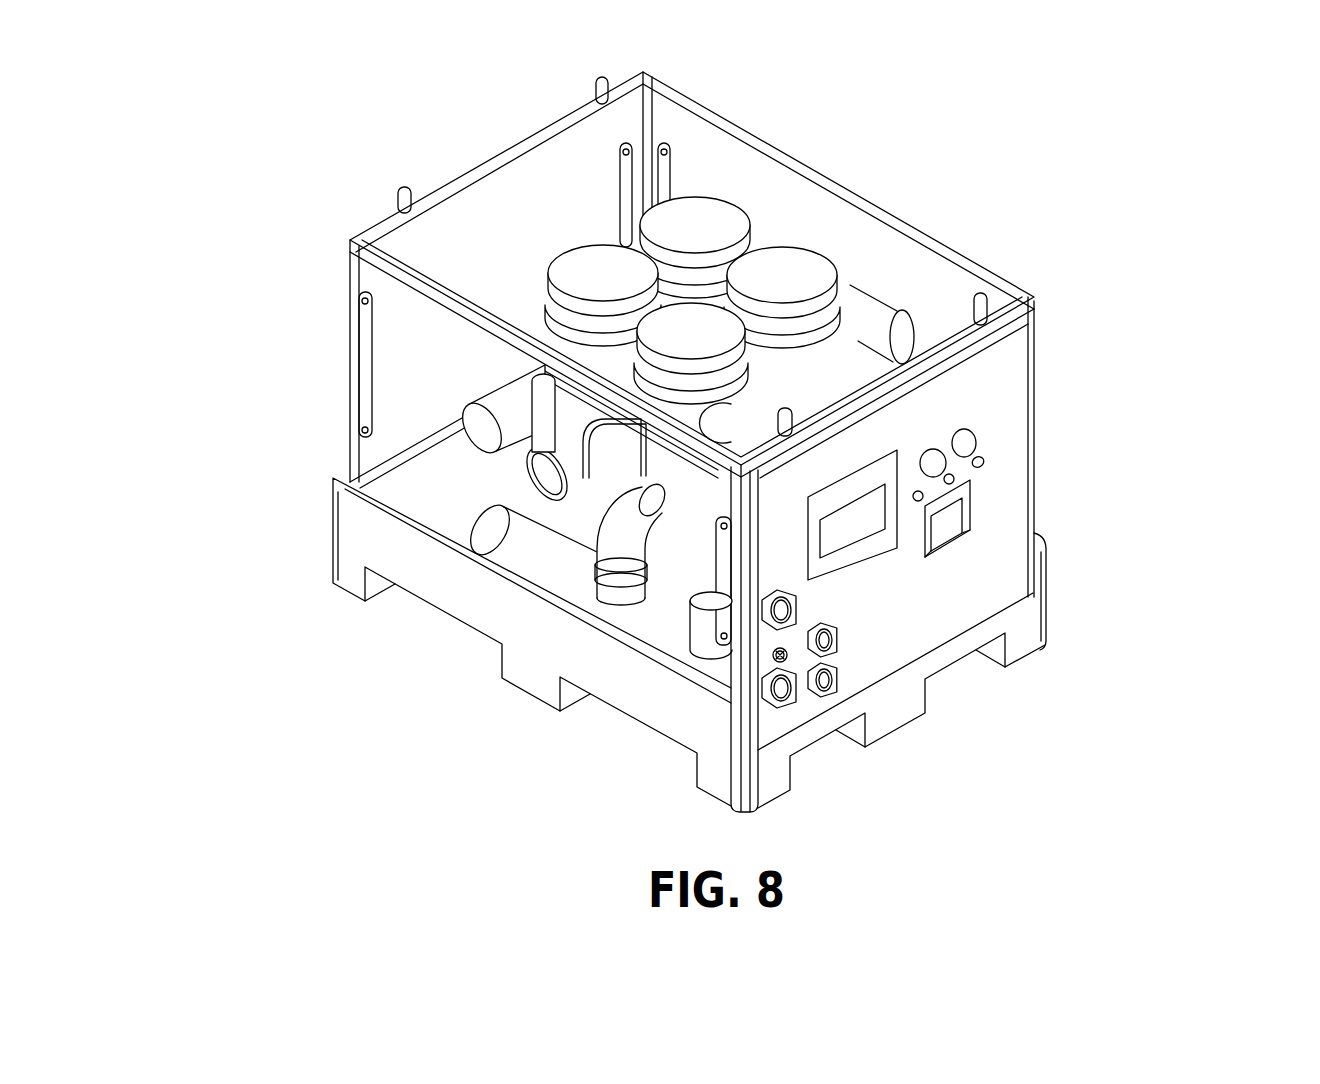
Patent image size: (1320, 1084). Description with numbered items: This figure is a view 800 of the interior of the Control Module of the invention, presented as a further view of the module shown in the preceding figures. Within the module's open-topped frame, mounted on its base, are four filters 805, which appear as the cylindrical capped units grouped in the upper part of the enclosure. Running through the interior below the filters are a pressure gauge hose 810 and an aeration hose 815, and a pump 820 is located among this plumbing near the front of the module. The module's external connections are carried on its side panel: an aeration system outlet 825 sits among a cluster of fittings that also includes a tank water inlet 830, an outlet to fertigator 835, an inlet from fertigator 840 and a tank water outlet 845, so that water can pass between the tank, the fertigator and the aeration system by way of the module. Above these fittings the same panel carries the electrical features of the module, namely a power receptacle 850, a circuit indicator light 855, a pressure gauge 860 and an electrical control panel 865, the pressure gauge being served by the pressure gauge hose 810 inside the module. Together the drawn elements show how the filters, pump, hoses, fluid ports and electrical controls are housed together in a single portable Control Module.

The view 800 is at (560, 896).
The filters 805 is at (573, 273).
The pressure gauge hose 810 is at (597, 418).
The aeration hose 815 is at (650, 469).
The pump 820 is at (607, 568).
The aeration system outlet 825 is at (770, 662).
The tank water inlet 830 is at (792, 710).
The outlet to fertigator 835 is at (837, 668).
The inlet from fertigator 840 is at (836, 636).
The tank water outlet 845 is at (797, 614).
The power receptacle 850 is at (972, 512).
The circuit indicator light 855 is at (988, 446).
The pressure gauge 860 is at (967, 430).
The electrical control panel 865 is at (848, 478).